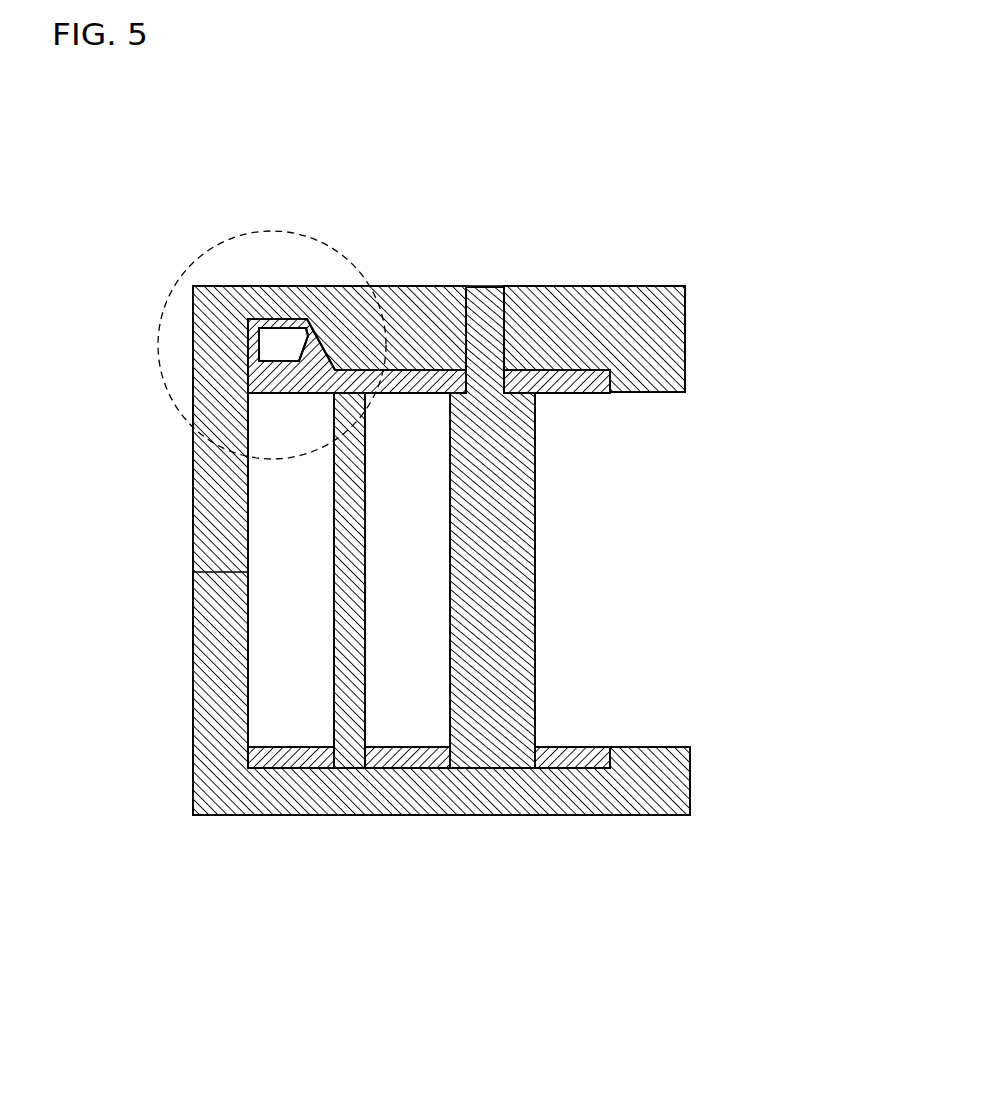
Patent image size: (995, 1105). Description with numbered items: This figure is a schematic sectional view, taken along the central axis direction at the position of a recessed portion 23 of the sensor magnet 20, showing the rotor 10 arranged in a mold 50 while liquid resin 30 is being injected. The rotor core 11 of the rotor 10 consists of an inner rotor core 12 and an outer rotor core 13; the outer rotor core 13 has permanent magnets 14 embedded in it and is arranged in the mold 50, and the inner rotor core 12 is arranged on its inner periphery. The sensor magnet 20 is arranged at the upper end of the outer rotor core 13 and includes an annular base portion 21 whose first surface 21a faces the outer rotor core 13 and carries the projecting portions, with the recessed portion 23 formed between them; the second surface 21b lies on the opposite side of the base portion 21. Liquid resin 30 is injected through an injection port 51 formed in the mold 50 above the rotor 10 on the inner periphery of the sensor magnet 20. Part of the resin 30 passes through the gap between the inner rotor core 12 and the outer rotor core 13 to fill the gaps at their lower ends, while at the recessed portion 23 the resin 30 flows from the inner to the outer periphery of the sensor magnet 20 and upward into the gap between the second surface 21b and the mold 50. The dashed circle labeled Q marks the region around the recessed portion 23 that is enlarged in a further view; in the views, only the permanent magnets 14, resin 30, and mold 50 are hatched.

The rotor 10 is at (686, 590).
The rotor core 11 is at (427, 1000).
The inner rotor core 12 is at (653, 722).
The outer rotor core 13 is at (402, 707).
The permanent magnets 14 is at (340, 743).
The sensor magnet 20 is at (269, 286).
The base portion 21 is at (268, 343).
The first surface 21a is at (280, 396).
The second surface 21b is at (308, 286).
The recessed portion 23 is at (258, 388).
The resin 30 is at (510, 443).
The mold 50 is at (217, 515).
The injection port 51 is at (468, 286).
The enlarged region Q is at (362, 258).